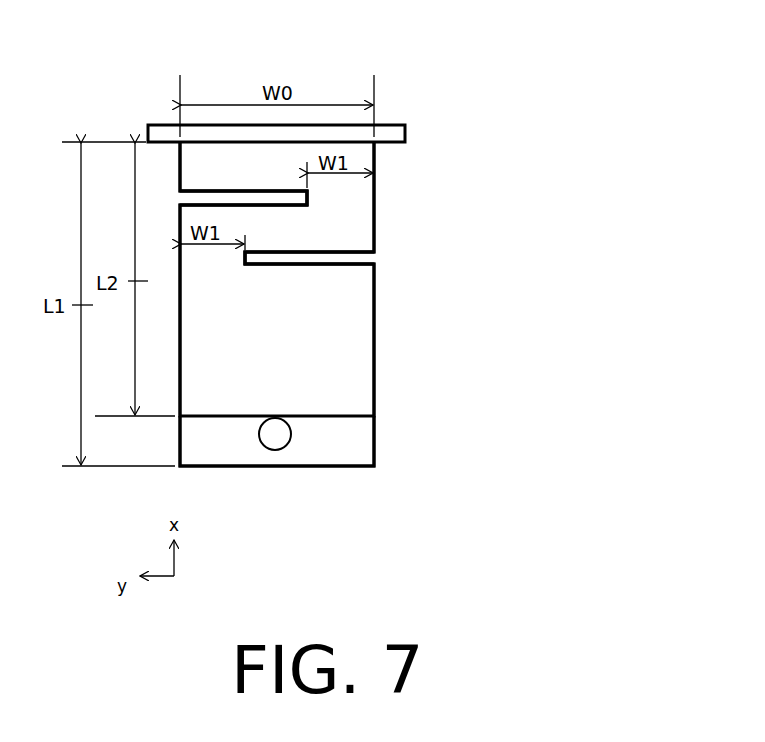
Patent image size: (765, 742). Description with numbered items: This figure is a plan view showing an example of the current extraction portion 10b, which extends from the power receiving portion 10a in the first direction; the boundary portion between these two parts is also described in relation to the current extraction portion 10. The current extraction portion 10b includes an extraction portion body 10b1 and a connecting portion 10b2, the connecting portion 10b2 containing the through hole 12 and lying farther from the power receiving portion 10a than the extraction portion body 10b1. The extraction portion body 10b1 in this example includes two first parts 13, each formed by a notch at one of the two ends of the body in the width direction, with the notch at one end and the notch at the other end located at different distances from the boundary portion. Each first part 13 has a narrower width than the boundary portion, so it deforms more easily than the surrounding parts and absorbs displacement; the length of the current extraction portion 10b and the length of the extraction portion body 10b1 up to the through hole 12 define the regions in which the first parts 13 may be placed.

The current extraction portion 10 is at (310, 289).
The power receiving portion 10a is at (158, 133).
The current extraction portion 10b is at (376, 337).
The extraction portion body 10b1 is at (350, 227).
The connecting portion 10b2 is at (336, 442).
The through hole 12 is at (277, 450).
The first part 13 is at (376, 190).